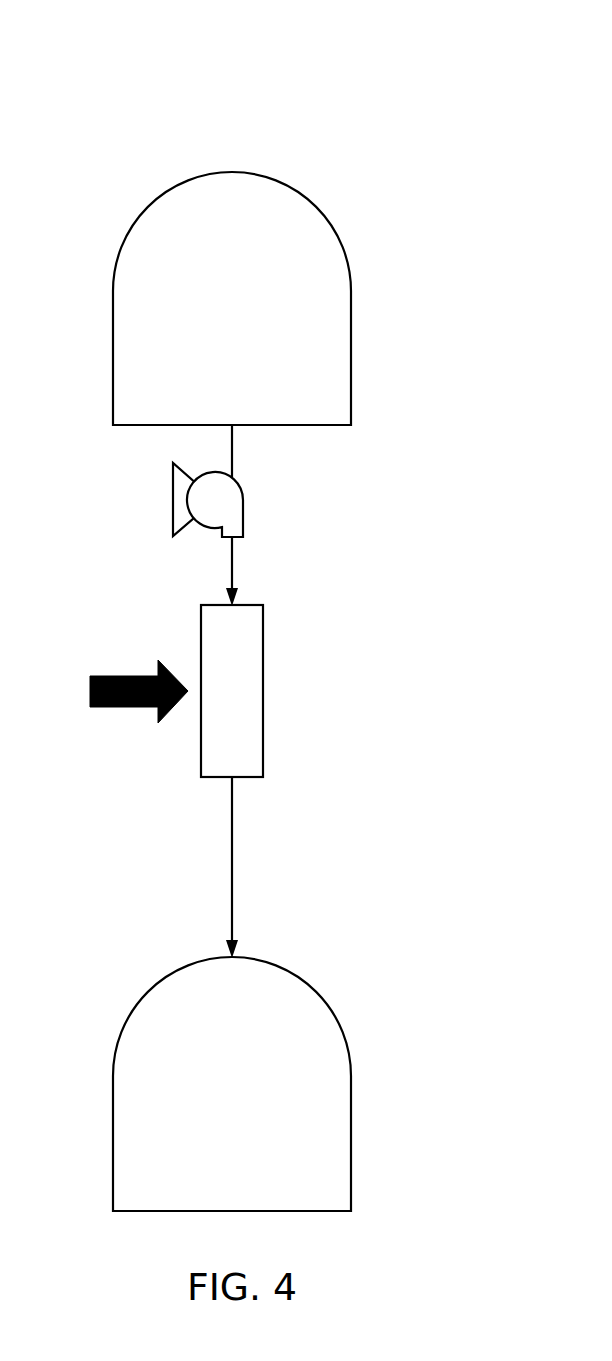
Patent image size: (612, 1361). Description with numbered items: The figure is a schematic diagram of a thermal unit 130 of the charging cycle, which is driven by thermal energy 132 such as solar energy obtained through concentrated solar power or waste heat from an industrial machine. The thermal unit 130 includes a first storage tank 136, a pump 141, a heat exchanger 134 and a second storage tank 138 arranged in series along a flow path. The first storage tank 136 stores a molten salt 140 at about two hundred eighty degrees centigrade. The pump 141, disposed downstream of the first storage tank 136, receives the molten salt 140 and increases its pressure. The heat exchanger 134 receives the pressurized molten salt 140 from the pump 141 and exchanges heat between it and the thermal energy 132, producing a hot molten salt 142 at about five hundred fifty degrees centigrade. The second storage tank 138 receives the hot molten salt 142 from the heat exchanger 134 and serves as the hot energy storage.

The thermal unit 130 is at (409, 62).
The thermal energy 132 is at (124, 708).
The heat exchanger 134 is at (265, 688).
The first storage tank 136 is at (352, 288).
The second storage tank 138 is at (353, 1138).
The molten salt 140 is at (215, 358).
The pump 141 is at (173, 513).
The hot molten salt 142 is at (240, 950).